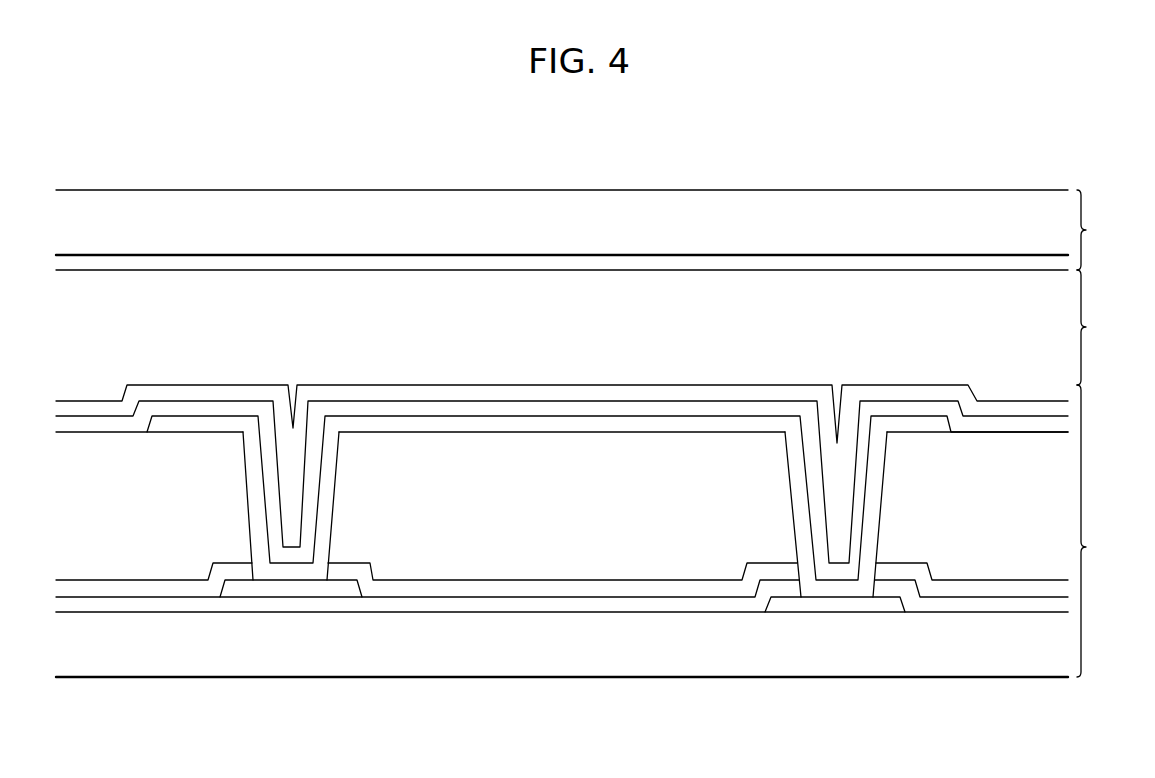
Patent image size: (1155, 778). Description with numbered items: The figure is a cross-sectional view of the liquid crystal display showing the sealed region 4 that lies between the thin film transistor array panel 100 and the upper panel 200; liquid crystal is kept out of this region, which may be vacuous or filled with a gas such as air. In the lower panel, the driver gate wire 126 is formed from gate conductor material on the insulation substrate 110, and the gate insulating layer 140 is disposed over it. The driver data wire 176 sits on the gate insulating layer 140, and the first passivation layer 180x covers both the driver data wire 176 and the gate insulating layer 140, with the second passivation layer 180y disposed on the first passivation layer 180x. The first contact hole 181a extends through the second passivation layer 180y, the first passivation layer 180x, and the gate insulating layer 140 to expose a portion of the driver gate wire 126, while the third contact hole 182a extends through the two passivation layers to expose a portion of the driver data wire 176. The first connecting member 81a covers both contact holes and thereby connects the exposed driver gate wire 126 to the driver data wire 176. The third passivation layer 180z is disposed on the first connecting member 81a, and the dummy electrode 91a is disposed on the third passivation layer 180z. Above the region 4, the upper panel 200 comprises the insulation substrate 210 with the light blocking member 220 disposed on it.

The region 4 is at (1091, 327).
The thin film transistor array panel 100 is at (1102, 531).
The insulation substrate 110 is at (955, 652).
The driver gate wire 126 is at (838, 607).
The gate insulating layer 140 is at (557, 602).
The driver data wire 176 is at (292, 587).
The first passivation layer 180x is at (425, 588).
The second passivation layer 180y is at (685, 545).
The third passivation layer 180z is at (918, 406).
The first connecting member 81a is at (530, 425).
The dummy electrode 91a is at (642, 392).
The first contact hole 181a is at (792, 473).
The third contact hole 182a is at (247, 473).
The upper panel 200 is at (1102, 230).
The insulation substrate 210 is at (390, 200).
The light blocking member 220 is at (732, 263).